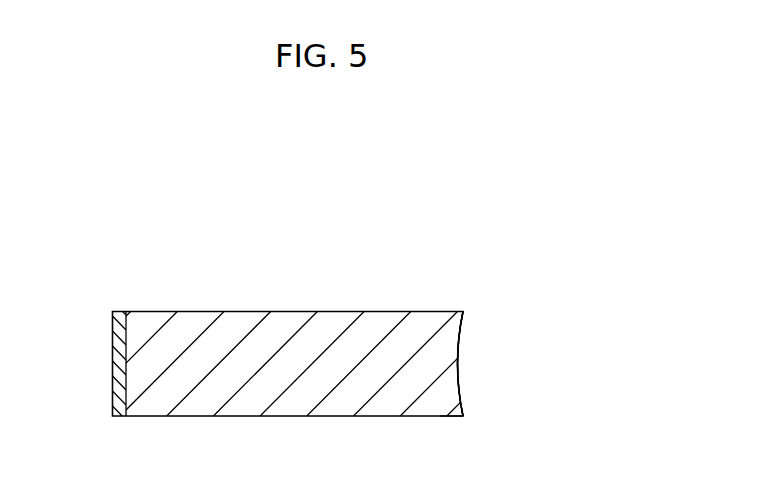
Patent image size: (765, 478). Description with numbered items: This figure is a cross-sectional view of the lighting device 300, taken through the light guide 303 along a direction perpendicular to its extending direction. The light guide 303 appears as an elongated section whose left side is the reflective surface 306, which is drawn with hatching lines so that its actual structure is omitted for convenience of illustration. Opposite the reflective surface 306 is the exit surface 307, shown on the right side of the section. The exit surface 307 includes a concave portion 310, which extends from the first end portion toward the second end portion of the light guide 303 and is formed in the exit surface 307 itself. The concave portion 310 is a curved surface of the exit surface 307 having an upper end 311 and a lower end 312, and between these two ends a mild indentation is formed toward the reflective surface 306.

The lighting device 300 is at (443, 235).
The light guide 303 is at (302, 312).
The reflective surface 306 is at (122, 358).
The exit surface 307 is at (462, 336).
The concave portion 310 is at (458, 365).
The upper end 311 is at (464, 312).
The lower end 312 is at (464, 417).